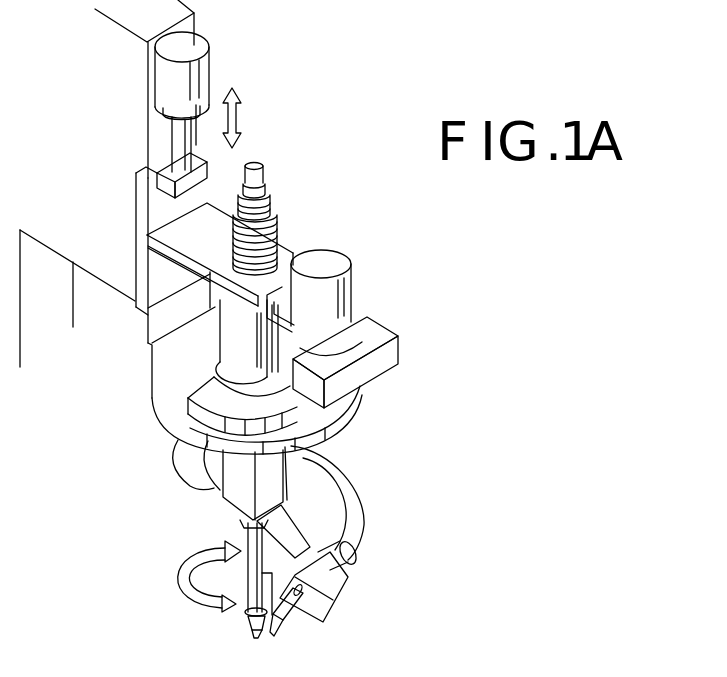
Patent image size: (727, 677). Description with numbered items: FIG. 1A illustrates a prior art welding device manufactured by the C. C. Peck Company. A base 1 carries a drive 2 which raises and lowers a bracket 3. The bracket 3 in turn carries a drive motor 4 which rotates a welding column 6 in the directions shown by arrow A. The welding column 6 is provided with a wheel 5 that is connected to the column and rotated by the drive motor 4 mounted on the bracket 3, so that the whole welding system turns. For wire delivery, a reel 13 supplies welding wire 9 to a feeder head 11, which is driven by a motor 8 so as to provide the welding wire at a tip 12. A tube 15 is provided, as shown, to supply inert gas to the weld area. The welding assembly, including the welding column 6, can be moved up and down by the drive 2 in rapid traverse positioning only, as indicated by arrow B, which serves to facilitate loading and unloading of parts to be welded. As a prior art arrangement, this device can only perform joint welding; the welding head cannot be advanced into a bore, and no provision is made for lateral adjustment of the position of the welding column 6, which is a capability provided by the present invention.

The base 1 is at (88, 131).
The drive 2 is at (201, 102).
The bracket 3 is at (200, 241).
The drive motor 4 is at (357, 297).
The wheel 5 is at (212, 388).
The welding column 6 is at (266, 173).
The motor 8 is at (358, 556).
The welding wire 9 is at (345, 470).
The feeder head 11 is at (344, 592).
The tip 12 is at (277, 636).
The reel 13 is at (180, 456).
The tube 15 is at (257, 598).
The arrow A is at (168, 570).
The arrow B is at (244, 115).